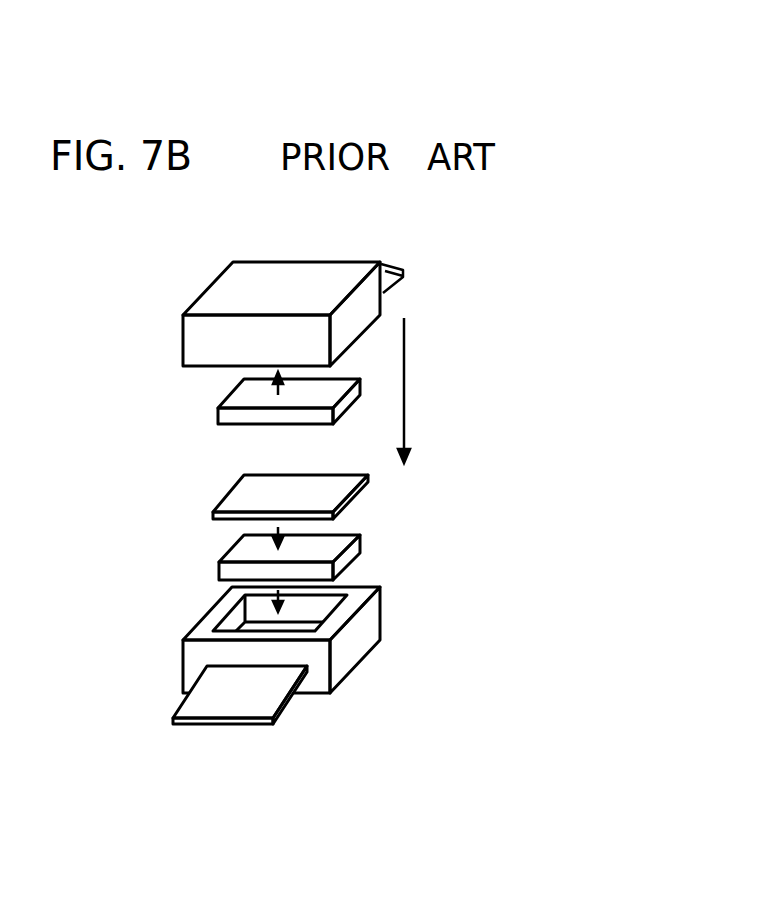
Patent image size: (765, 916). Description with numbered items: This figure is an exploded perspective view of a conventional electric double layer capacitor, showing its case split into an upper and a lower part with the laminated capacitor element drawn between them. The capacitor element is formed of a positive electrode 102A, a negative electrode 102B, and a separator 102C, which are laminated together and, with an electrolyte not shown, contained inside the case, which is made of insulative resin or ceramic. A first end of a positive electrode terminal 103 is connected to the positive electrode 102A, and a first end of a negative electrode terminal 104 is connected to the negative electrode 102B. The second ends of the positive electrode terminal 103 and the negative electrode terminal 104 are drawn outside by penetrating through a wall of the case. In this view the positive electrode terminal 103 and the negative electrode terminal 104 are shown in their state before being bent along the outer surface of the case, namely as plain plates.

The negative electrode terminal 104 is at (389, 266).
The negative electrode 102B is at (232, 415).
The separator 102C is at (242, 498).
The positive electrode 102A is at (242, 555).
The positive electrode terminal 103 is at (232, 707).